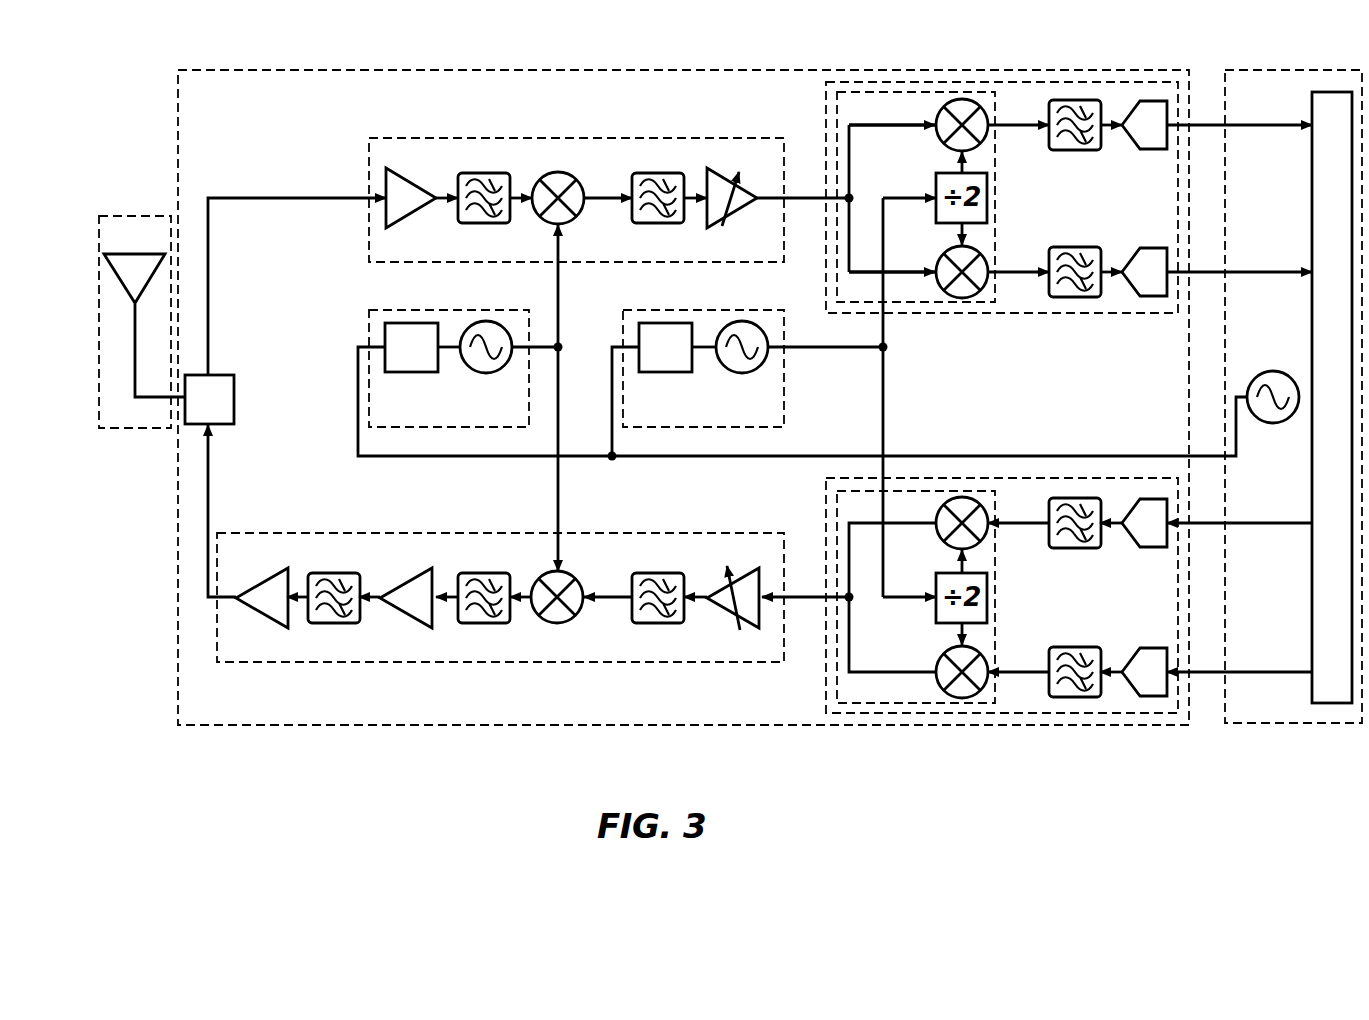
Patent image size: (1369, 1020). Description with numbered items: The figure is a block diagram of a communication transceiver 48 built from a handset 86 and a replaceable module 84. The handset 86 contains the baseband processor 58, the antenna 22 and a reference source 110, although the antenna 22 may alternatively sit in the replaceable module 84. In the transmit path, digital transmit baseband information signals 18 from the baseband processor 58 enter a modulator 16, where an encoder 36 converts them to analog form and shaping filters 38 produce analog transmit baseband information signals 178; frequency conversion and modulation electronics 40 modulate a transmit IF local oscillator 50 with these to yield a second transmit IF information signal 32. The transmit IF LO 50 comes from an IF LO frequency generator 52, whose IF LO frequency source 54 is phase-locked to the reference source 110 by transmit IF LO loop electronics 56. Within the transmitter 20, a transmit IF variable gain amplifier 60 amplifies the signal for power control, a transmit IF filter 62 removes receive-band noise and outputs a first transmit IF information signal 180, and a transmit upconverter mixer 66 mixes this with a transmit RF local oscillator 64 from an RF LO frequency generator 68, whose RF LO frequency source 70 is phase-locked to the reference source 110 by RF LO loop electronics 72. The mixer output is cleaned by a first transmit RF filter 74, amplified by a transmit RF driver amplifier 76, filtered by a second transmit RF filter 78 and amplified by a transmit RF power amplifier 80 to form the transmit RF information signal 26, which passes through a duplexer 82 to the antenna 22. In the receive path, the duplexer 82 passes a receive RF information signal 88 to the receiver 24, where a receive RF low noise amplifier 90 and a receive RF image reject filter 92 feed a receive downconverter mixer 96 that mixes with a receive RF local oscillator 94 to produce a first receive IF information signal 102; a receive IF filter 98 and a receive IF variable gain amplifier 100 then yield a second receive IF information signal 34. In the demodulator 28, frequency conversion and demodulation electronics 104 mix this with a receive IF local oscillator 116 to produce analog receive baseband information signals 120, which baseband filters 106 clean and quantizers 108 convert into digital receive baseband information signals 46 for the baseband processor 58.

The modulator 16 is at (1172, 612).
The digital transmit baseband information signal 18 is at (1207, 521).
The transmitter 20 is at (254, 562).
The antenna 22 is at (131, 254).
The receiver 24 is at (404, 164).
The transmit RF information signal 26 is at (209, 495).
The demodulator 28 is at (1172, 214).
The second transmit IF information signal 32 is at (797, 595).
The second receive IF information signal 34 is at (801, 195).
The encoder 36 is at (1128, 542).
The shaping filters 38 is at (1078, 548).
The frequency conversion and modulation electronics 40 is at (874, 698).
The digital receive baseband information signals 46 is at (1208, 123).
The communication transceiver 48 is at (518, 747).
The transmit IF local oscillator 50 is at (886, 571).
The IF LO frequency generator 52 is at (711, 418).
The IF LO frequency source 54 is at (742, 373).
The transmit IF LO loop electronics 56 is at (664, 372).
The baseband processor 58 is at (1319, 126).
The transmit IF variable gain amplifier 60 is at (723, 614).
The transmit IF filter 62 is at (658, 572).
The transmit RF local oscillator 64 is at (562, 504).
The transmit upconverter mixer 66 is at (557, 623).
The RF LO frequency generator 68 is at (458, 418).
The RF LO frequency source 70 is at (486, 373).
The RF LO loop electronics 72 is at (414, 372).
The first transmit RF filter 74 is at (482, 623).
The transmit RF driver amplifier 76 is at (395, 612).
The second transmit RF filter 78 is at (332, 623).
The transmit RF power amplifier 80 is at (248, 618).
The duplexer 82 is at (222, 411).
The replaceable module 84 is at (226, 700).
The handset 86 is at (133, 424).
The receive RF information signal 88 is at (209, 306).
The receive RF low noise amplifier 90 is at (418, 211).
The receive RF image reject filter 92 is at (485, 223).
The receive RF local oscillator 94 is at (561, 253).
The receive downconverter mixer 96 is at (558, 172).
The receive IF filter 98 is at (659, 173).
The receive IF variable gain amplifier 100 is at (727, 172).
The first receive IF information signal 102 is at (602, 196).
The frequency conversion and demodulation electronics 104 is at (884, 301).
The baseband filters 106 is at (1077, 150).
The quantizers 108 is at (1128, 142).
The reference source 110 is at (1271, 424).
The receive IF local oscillator 116 is at (886, 251).
The analog receive baseband information signals 120 is at (1017, 127).
The analog transmit baseband information signals 178 is at (1013, 521).
The first transmit IF information signal 180 is at (605, 595).